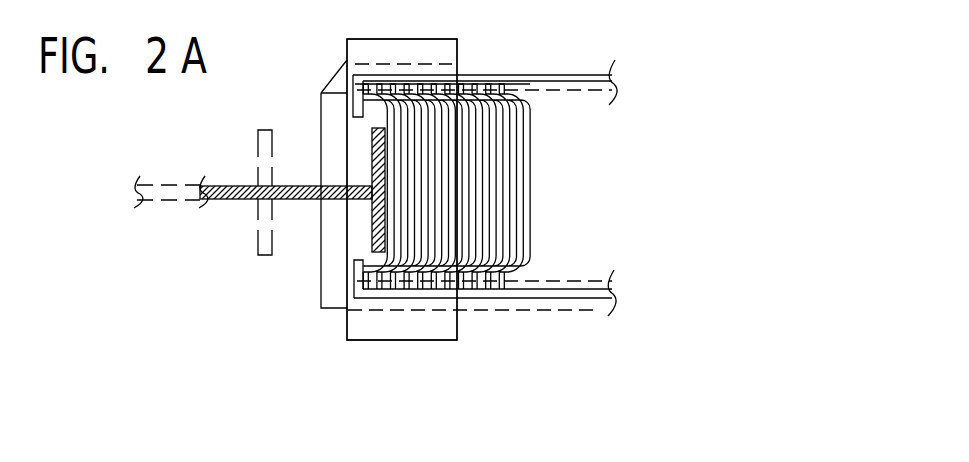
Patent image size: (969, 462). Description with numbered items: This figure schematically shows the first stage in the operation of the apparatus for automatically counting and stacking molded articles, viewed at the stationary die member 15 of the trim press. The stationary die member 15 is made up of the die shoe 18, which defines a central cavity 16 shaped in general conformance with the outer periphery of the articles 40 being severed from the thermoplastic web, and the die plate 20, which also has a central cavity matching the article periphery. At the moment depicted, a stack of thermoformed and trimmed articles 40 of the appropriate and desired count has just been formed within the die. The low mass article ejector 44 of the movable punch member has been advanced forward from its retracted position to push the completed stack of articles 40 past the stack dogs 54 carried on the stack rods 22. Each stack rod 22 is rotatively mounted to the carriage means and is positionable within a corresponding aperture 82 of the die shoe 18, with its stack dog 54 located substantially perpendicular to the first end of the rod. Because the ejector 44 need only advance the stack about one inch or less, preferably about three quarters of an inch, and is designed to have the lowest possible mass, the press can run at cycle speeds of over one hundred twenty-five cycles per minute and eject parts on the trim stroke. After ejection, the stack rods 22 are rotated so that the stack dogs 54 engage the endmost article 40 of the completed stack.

The stationary die member 15 is at (322, 340).
The central cavity 16 is at (358, 220).
The die shoe 18 is at (407, 39).
The die plate 20 is at (441, 333).
The stack rods 22 is at (513, 74).
The articles 40 is at (530, 185).
The low mass article ejector 44 is at (256, 158).
The stack dog 54 is at (321, 93).
The aperture 82 is at (352, 64).